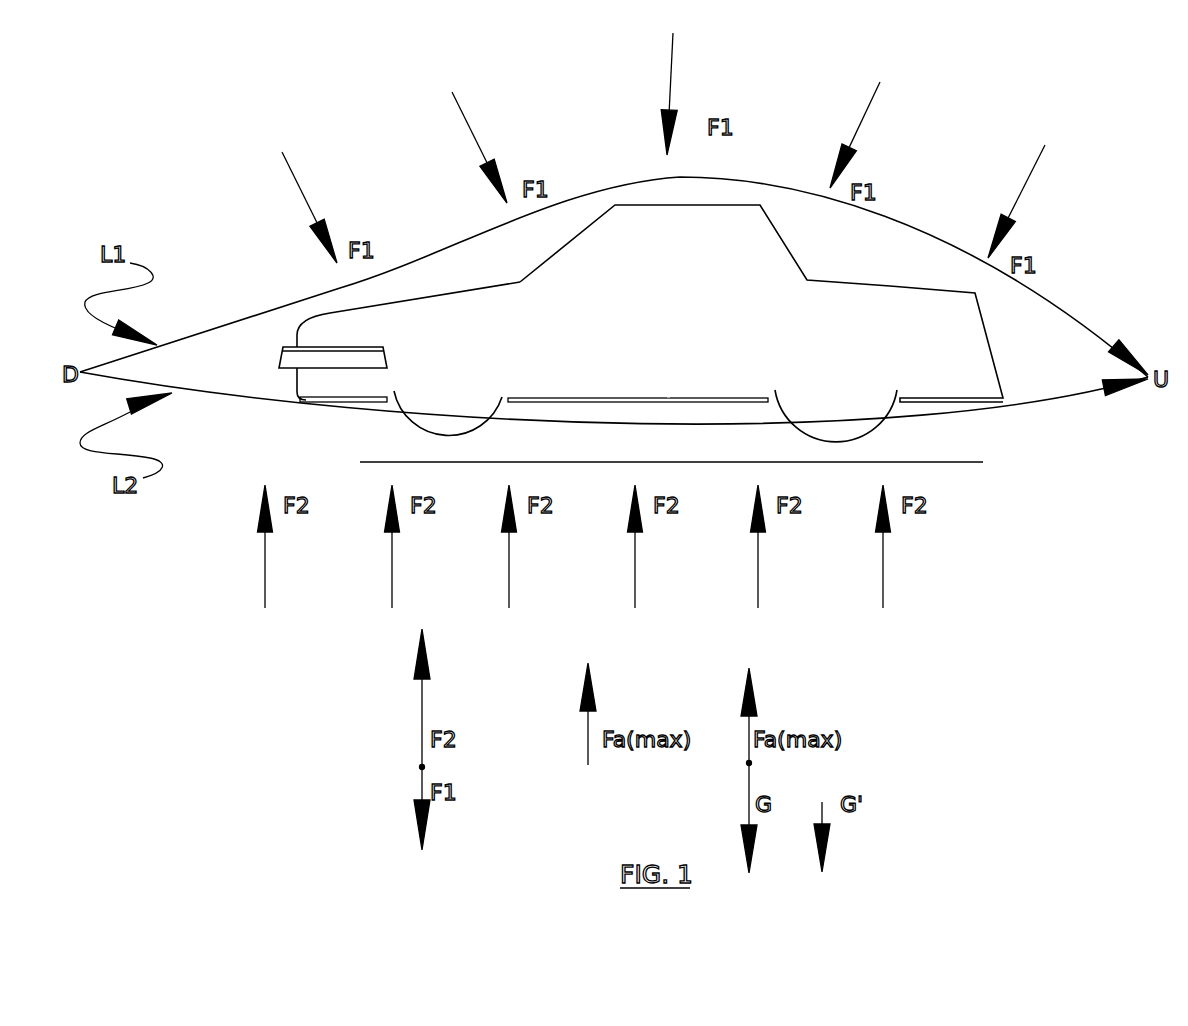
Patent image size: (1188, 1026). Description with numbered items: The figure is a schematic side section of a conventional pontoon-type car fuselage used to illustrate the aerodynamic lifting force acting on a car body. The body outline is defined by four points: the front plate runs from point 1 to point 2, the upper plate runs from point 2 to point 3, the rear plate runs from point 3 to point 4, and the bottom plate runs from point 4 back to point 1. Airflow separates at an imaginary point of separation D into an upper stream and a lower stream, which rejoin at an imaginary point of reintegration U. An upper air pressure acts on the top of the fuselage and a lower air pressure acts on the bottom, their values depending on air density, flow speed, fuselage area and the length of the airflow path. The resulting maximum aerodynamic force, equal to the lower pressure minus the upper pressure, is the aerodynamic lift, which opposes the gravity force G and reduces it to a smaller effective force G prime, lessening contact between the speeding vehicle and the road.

The front plate end point 1 is at (333, 374).
The front plate to upper plate junction 2 is at (605, 243).
The upper plate to rear plate junction 3 is at (790, 245).
The rear plate to bottom plate junction 4 is at (946, 344).